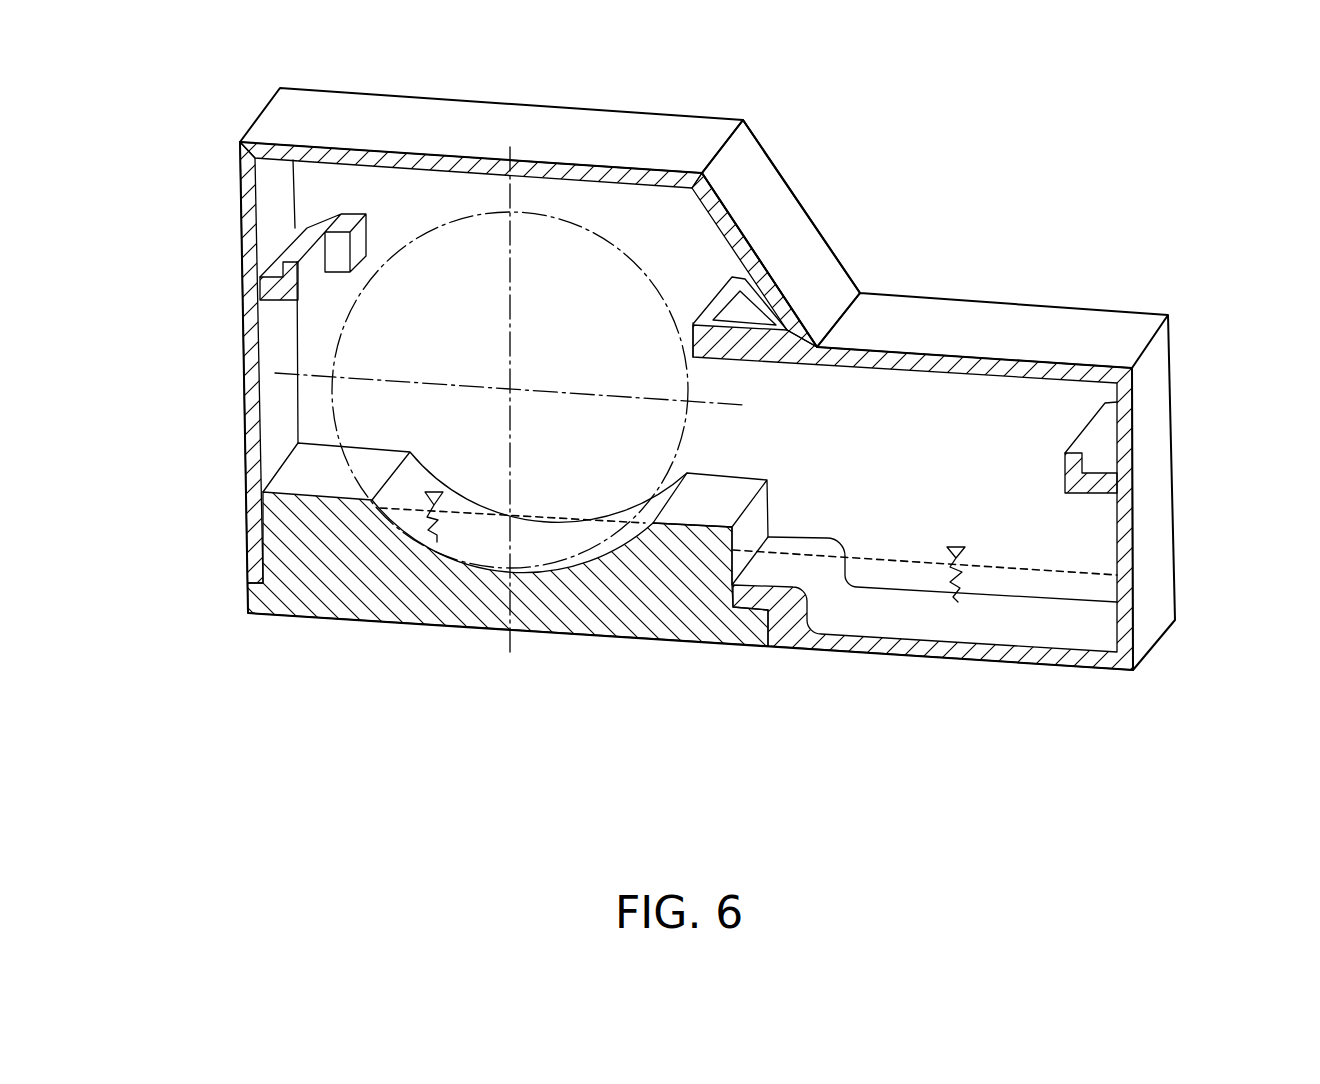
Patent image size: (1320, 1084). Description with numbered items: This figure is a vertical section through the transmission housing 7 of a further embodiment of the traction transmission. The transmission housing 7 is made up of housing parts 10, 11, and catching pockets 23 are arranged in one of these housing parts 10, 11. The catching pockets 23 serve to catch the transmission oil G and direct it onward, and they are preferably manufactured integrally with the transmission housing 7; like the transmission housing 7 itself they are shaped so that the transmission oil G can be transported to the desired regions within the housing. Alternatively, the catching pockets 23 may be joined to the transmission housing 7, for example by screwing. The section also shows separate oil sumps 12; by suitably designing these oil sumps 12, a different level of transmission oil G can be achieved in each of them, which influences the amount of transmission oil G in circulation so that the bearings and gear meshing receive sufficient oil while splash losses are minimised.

The housing part 10 is at (226, 144).
The transmission housing 7 is at (763, 167).
The catching pocket 23 is at (272, 258).
The housing part 11 is at (285, 597).
The oil sump 12 is at (475, 546).
The transmission oil G is at (564, 558).